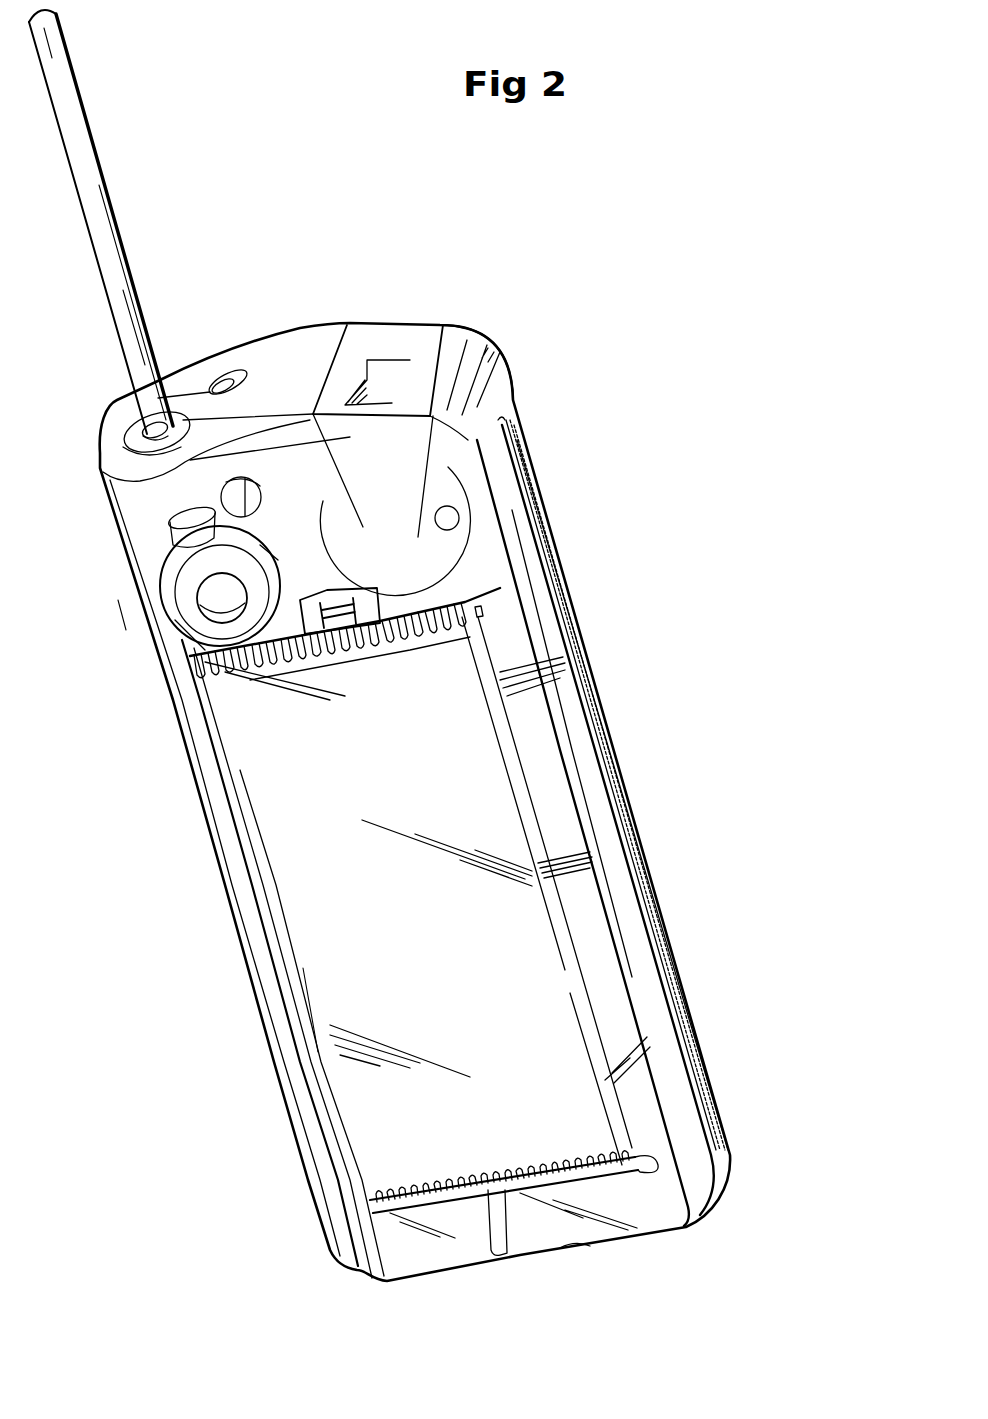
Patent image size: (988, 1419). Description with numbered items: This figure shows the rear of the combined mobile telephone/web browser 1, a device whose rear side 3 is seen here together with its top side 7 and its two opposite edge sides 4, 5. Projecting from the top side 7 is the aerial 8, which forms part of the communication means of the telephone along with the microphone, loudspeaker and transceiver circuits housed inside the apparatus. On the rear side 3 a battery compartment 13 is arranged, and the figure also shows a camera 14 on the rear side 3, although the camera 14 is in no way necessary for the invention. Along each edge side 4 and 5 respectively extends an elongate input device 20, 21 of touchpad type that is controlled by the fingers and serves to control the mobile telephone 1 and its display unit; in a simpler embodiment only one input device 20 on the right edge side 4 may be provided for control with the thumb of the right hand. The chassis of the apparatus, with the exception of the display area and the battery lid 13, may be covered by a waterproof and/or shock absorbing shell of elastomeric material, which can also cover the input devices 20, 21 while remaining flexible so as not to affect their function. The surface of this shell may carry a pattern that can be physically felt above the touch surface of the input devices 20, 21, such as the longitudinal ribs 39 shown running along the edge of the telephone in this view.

The combined mobile telephone/web browser 1 is at (665, 557).
The rear side 3 is at (152, 497).
The edge side 4 is at (100, 452).
The edge side 5 is at (498, 380).
The top side 7 is at (289, 344).
The aerial 8 is at (104, 182).
The battery compartment 13 is at (251, 708).
The camera 14 is at (195, 592).
The input device 20 is at (250, 988).
The input device 21 is at (647, 860).
The longitudinal ribs 39 is at (702, 1053).